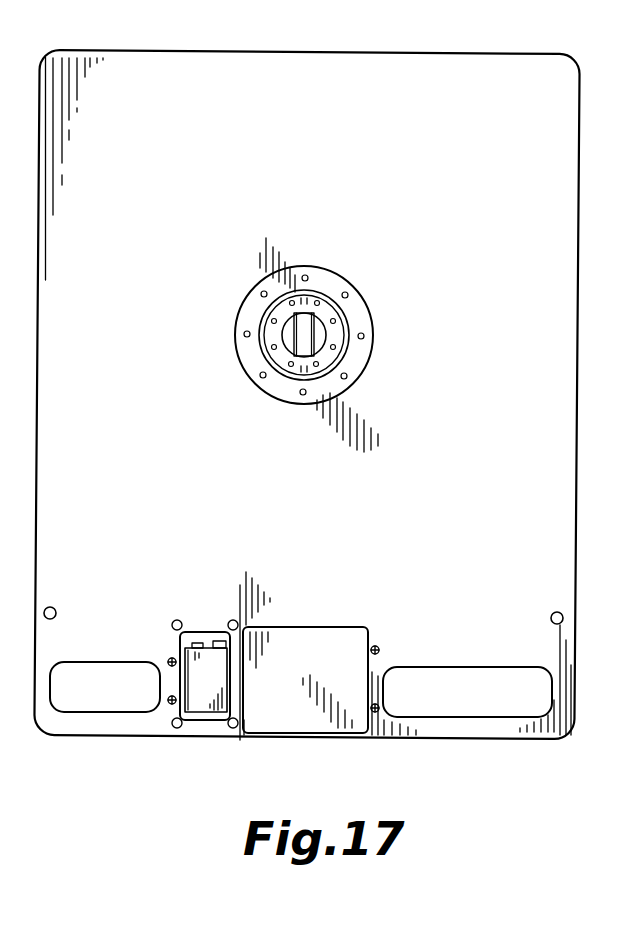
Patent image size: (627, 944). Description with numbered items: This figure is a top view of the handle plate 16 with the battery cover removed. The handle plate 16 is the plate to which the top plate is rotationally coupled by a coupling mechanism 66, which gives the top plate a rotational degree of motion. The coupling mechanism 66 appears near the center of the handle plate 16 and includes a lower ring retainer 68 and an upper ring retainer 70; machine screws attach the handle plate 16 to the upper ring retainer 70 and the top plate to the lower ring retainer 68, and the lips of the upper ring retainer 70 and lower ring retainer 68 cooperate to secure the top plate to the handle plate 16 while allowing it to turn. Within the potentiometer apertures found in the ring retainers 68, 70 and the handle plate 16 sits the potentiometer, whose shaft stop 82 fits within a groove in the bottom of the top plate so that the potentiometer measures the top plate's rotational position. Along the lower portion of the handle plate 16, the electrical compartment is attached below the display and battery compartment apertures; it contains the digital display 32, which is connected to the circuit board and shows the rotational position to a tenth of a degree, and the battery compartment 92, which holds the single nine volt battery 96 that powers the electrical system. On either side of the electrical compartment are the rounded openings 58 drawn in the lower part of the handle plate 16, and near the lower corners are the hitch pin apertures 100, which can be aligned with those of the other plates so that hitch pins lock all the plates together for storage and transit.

The handle plate 16 is at (236, 52).
The digital display 32 is at (313, 670).
The slot 58 is at (122, 714).
The coupling mechanism 66 is at (229, 409).
The lower ring retainer 68 is at (364, 366).
The upper ring retainer 70 is at (327, 303).
The potentiometer shaft stop 82 is at (311, 342).
The battery compartment 92 is at (212, 722).
The battery 96 is at (181, 660).
The hitch pin apertures 100 is at (55, 608).